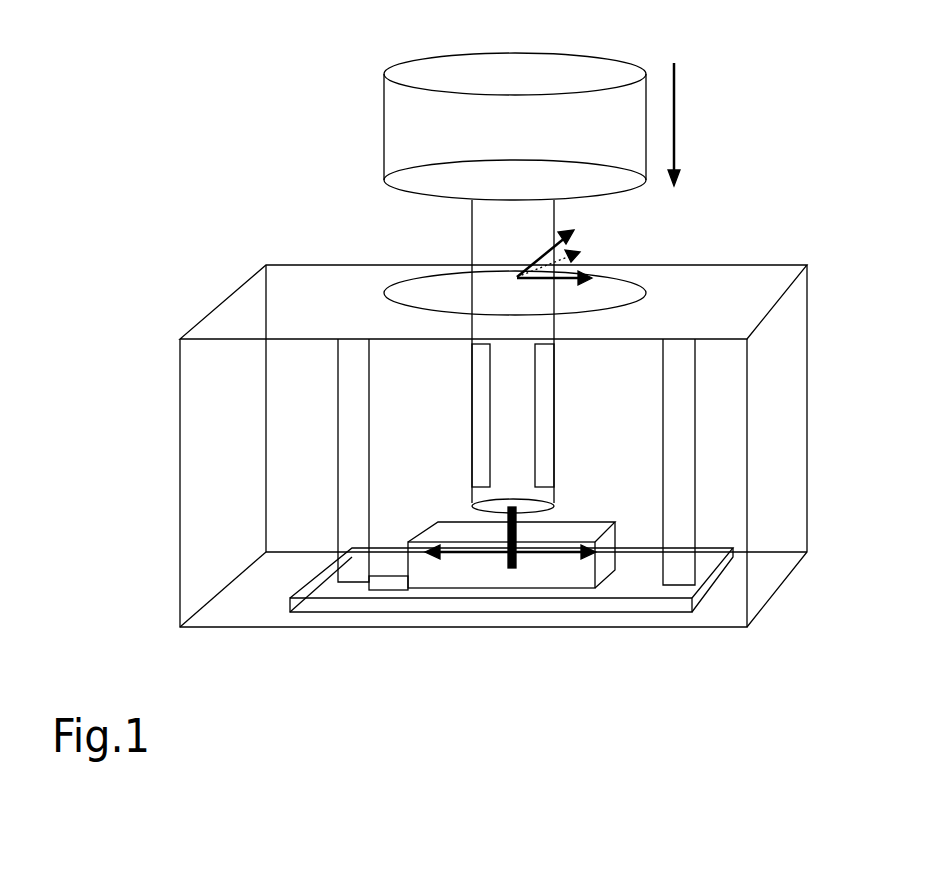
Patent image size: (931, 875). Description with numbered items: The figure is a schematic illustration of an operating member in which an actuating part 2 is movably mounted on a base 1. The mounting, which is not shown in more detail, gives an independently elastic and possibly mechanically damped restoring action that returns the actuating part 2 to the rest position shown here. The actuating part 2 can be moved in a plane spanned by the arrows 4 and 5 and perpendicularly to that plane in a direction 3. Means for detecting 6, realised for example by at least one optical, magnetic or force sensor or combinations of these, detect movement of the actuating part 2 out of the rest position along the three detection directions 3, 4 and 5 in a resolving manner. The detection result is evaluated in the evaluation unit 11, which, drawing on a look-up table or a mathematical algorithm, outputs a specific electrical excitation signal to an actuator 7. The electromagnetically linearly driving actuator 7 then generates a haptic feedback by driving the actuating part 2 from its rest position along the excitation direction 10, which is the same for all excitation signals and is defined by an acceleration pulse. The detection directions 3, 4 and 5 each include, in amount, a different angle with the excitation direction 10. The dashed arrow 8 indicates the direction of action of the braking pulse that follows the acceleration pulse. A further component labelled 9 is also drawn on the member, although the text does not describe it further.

The base 1 is at (333, 288).
The actuating part 2 is at (513, 73).
The detection direction 3 is at (680, 120).
The detection direction 4 is at (583, 265).
The detection direction 5 is at (572, 232).
The means for detecting 6 is at (338, 463).
The actuator 7 is at (548, 565).
The dashed arrow 8 is at (553, 557).
The rotary table 9 is at (517, 273).
The excitation direction 10 is at (500, 548).
The evaluation unit 11 is at (298, 594).